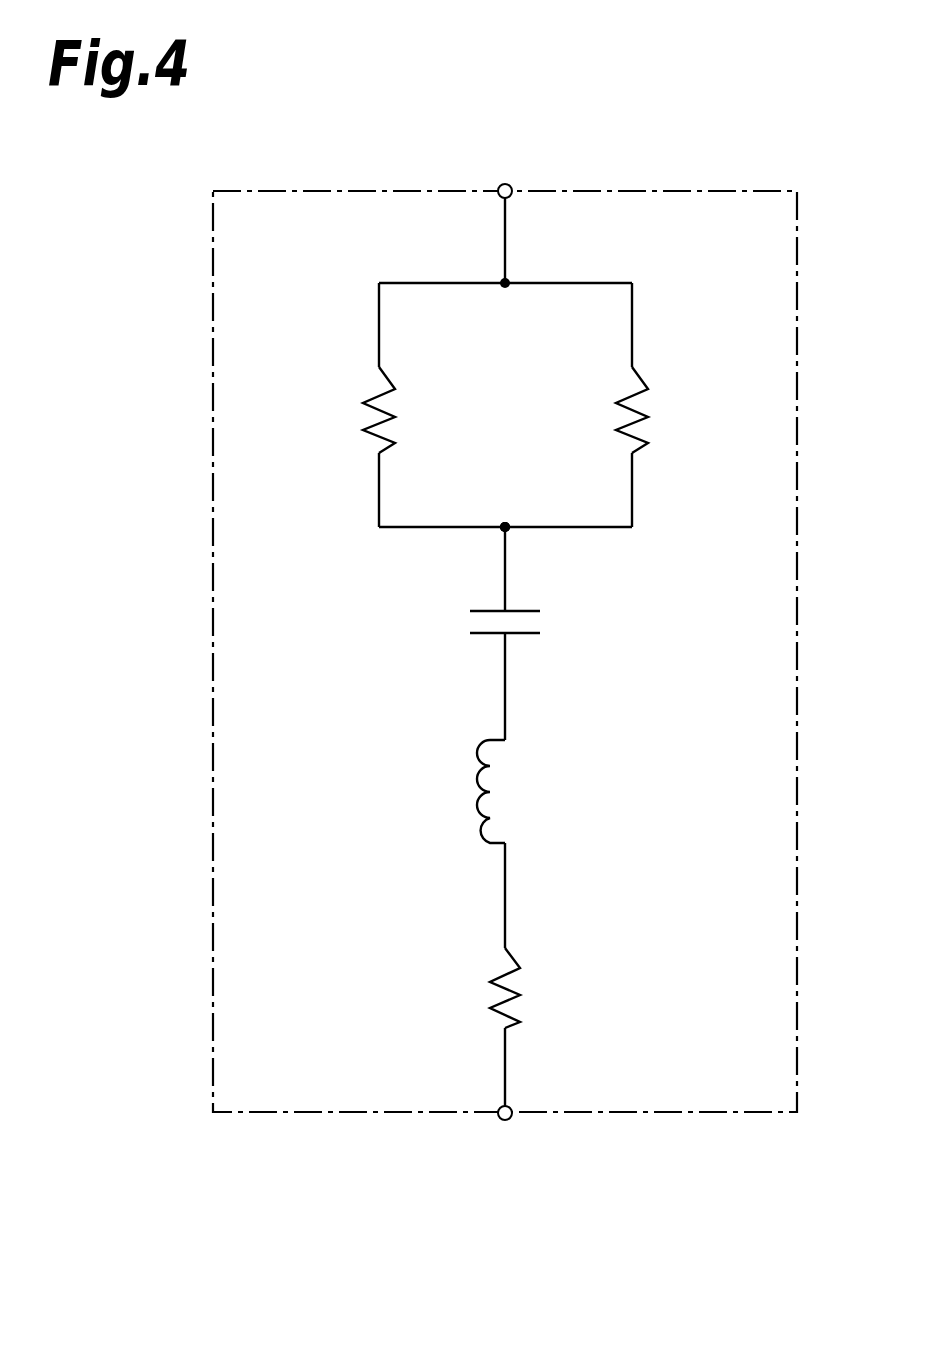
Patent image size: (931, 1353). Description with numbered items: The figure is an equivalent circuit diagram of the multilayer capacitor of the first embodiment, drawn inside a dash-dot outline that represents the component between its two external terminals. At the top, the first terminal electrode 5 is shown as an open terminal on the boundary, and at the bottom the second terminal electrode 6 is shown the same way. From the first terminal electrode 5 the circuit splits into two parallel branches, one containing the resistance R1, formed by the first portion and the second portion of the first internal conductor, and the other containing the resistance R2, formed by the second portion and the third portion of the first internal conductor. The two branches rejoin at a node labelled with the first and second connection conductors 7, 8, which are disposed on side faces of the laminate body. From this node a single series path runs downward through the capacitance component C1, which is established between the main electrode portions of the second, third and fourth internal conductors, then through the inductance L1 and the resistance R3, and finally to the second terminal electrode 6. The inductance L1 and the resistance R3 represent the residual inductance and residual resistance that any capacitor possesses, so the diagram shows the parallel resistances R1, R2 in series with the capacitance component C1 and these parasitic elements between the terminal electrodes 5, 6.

The first terminal electrode 5 is at (505, 183).
The second terminal electrode 6 is at (505, 1121).
The first connection conductor 7 is at (505, 522).
The second connection conductor 8 is at (505, 527).
The resistance R1 is at (355, 370).
The resistance R2 is at (655, 368).
The resistance R3 is at (529, 1030).
The capacitance component C1 is at (545, 645).
The inductance L1 is at (522, 845).